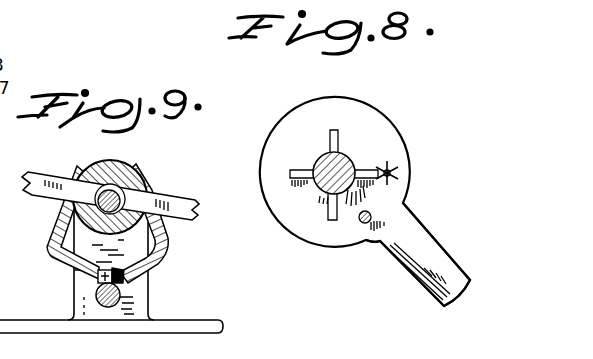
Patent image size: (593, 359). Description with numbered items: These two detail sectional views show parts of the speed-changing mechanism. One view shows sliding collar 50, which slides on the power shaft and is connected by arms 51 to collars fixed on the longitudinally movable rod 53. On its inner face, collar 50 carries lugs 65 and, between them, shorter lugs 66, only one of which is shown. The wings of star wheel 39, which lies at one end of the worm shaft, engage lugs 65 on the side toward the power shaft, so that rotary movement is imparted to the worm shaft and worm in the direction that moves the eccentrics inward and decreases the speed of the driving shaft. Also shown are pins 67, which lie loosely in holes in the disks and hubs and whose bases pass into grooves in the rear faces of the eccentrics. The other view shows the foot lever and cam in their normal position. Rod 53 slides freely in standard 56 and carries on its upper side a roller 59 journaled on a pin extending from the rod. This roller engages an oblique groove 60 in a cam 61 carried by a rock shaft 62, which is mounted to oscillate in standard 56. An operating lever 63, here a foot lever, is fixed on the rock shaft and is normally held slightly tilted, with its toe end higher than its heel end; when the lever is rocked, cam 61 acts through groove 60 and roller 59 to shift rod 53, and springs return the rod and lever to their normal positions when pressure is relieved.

In FIG. 8, the sliding collar 50 is at (377, 123).
In FIG. 8, the arms 51 is at (428, 254).
In FIG. 8, the shorter lugs 66 is at (339, 172).
In FIG. 8, the lugs 65 is at (298, 168).
In FIG. 8, the star wheel 39 is at (393, 165).
In FIG. 8, the pins 67 is at (371, 215).
In FIG. 9, the standard 56 is at (136, 308).
In FIG. 9, the roller 59 is at (113, 268).
In FIG. 9, the operating lever 63 is at (58, 175).
In FIG. 9, the cam 61 is at (74, 262).
In FIG. 9, the rock shaft 62 is at (138, 190).
In FIG. 9, the oblique groove 60 is at (100, 284).
In FIG. 9, the longitudinally movable rod 53 is at (122, 292).